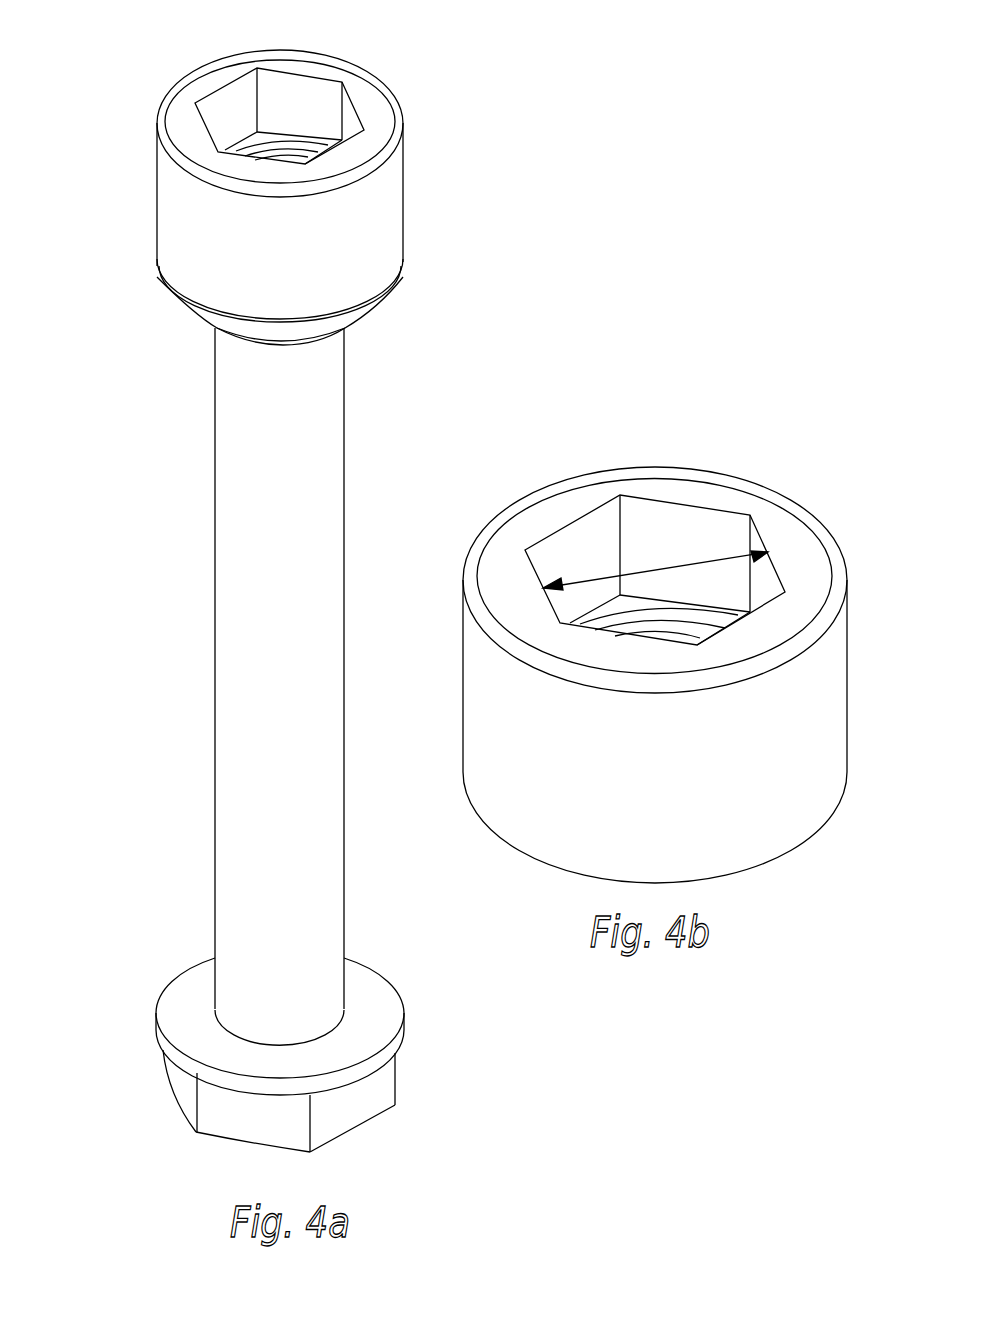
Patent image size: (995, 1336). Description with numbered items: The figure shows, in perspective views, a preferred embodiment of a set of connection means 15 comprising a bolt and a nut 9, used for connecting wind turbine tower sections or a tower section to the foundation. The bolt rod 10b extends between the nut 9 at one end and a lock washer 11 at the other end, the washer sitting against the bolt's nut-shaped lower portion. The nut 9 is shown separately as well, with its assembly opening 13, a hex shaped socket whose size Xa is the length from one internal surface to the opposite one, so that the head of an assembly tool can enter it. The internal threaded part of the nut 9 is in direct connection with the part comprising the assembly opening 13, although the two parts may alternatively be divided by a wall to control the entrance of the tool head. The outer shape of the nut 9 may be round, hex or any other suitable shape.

In FIG. 4A, the nut 9 is at (353, 231).
In FIG. 4B, the nut 9 is at (806, 494).
In FIG. 4A, the assembly opening of the nut 13 is at (301, 98).
In FIG. 4B, the assembly opening of the nut 13 is at (673, 518).
In FIG. 4A, the bolt rod 10b is at (250, 793).
In FIG. 4A, the lock washer 11 is at (170, 1005).
In FIG. 4A, the set of connection means 15 is at (420, 953).